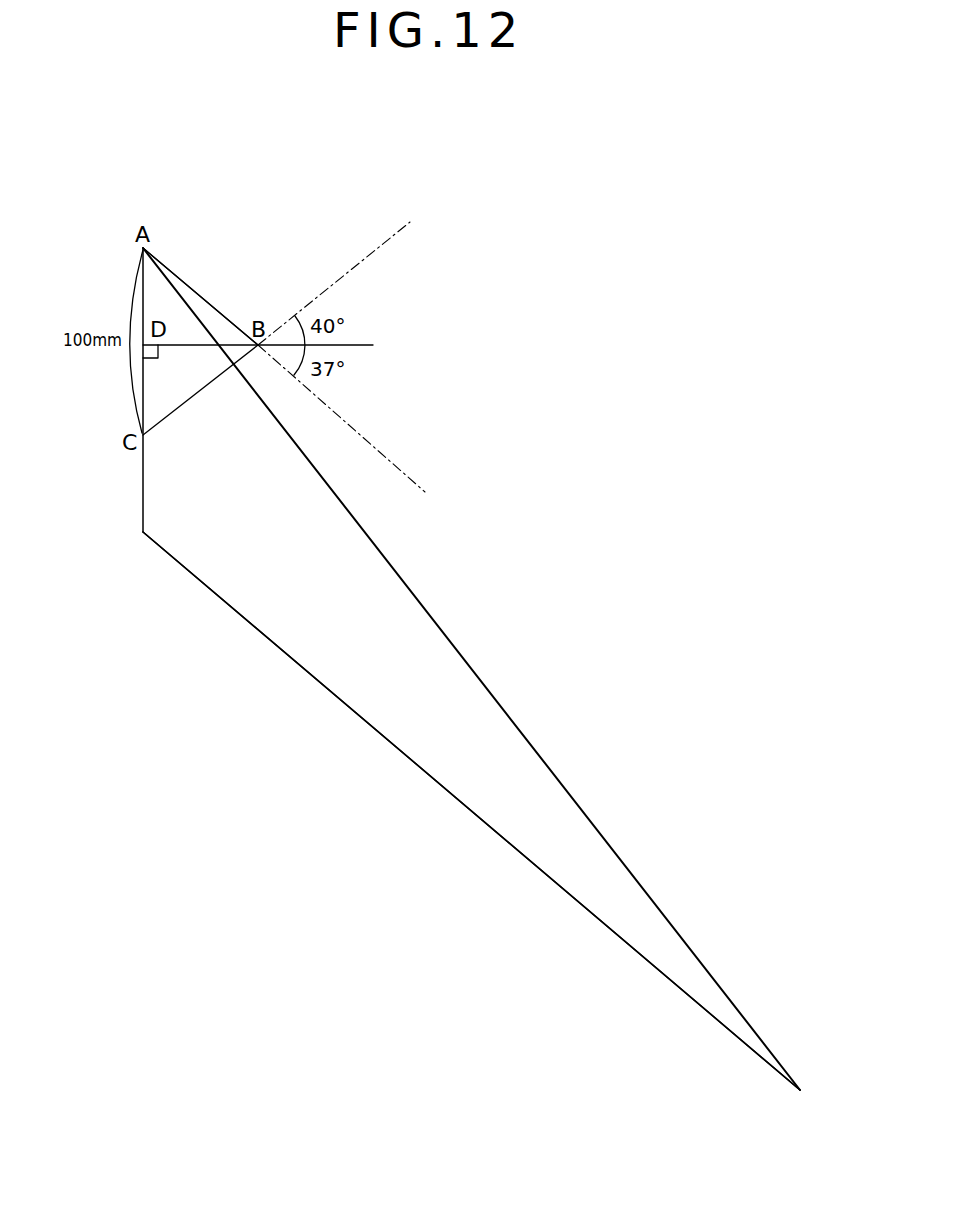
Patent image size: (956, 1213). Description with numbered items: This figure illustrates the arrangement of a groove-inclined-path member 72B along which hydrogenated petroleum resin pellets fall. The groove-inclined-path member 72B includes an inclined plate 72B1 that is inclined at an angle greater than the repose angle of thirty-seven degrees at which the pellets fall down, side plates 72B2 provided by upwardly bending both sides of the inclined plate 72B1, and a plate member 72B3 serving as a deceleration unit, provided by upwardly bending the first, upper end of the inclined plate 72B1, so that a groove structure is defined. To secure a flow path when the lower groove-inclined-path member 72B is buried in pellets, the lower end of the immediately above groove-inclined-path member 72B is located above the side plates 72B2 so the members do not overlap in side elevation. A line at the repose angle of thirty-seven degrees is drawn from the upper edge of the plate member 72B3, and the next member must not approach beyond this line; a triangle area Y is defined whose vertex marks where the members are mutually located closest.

The groove-inclined-path member 72B is at (493, 695).
The inclined plate 72B1 is at (278, 647).
The side plate 72B2 is at (390, 717).
The plate member 72B3 is at (143, 488).
The triangle area Y is at (202, 295).